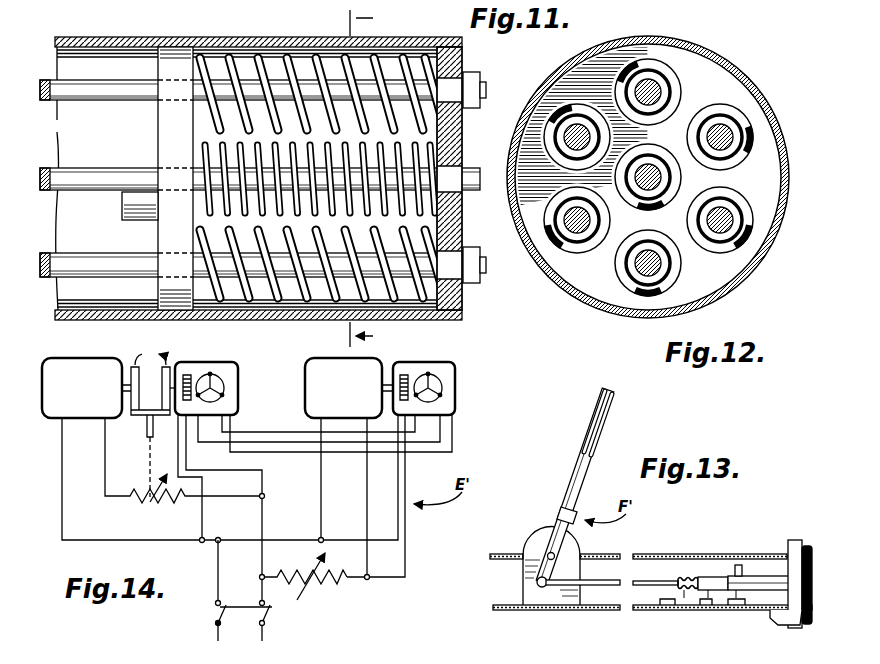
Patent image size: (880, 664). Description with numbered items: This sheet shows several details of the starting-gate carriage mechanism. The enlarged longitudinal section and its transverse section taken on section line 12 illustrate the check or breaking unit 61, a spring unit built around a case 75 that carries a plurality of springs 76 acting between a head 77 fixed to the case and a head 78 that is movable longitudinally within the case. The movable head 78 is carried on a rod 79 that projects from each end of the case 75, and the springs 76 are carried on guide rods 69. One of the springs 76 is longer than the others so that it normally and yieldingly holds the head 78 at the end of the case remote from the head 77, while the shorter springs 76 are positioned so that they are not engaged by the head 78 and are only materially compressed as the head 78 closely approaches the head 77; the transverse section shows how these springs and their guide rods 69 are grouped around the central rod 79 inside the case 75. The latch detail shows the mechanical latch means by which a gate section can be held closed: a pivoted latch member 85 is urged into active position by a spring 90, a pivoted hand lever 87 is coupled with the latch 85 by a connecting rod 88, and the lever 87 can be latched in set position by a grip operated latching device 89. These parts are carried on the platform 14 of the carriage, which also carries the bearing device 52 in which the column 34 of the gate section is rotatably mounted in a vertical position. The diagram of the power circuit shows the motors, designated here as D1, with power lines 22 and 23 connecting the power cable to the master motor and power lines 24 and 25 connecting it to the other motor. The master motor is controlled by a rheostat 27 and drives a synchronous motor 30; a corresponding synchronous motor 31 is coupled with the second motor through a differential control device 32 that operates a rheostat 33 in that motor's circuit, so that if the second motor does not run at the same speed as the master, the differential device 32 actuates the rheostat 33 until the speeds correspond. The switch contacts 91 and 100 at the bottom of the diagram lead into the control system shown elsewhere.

In FIG. 11, the check or breaking unit 61 is at (178, 38).
In FIG. 12, the check or breaking unit 61 is at (780, 116).
In FIG. 11, the case 75 is at (245, 37).
In FIG. 12, the case 75 is at (548, 92).
In FIG. 11, the springs 76 is at (298, 60).
In FIG. 12, the springs 76 is at (735, 100).
In FIG. 11, the section line 12— 12 is at (371, 178).
In FIG. 11, the guide rods 69 is at (80, 97).
In FIG. 12, the guide rods 69 is at (655, 85).
In FIG. 11, the rod 79 is at (100, 166).
In FIG. 12, the rod 79 is at (655, 177).
In FIG. 11, the head 78 is at (162, 236).
In FIG. 11, the head 77 is at (464, 196).
In FIG. 13, the platform 14 is at (497, 612).
In FIG. 13, the grip operated latching device 89 is at (580, 462).
In FIG. 13, the pivoted hand lever 87 is at (598, 449).
In FIG. 13, the connecting rod 88 is at (594, 590).
In FIG. 13, the spring 90 is at (688, 578).
In FIG. 13, the pivoted latch member 85 is at (716, 577).
In FIG. 13, the column 34 is at (795, 541).
In FIG. 13, the bearing device 52 is at (790, 618).
In FIG. 14, the motors M and M1 D1 is at (56, 422).
In FIG. 14, the differential control device 32 is at (133, 415).
In FIG. 14, the synchronous motor 31 is at (240, 391).
In FIG. 14, the synchronous motor 30 is at (456, 390).
In FIG. 14, the rheostat 33 is at (145, 502).
In FIG. 14, the power line 24 is at (186, 540).
In FIG. 14, the power line 25 is at (222, 498).
In FIG. 14, the power line 22 is at (300, 540).
In FIG. 14, the power line 23 is at (367, 499).
In FIG. 14, the rheostat 27 is at (338, 580).
In FIG. 14, the switch 91 is at (195, 660).
In FIG. 14, the switch 100 is at (248, 662).